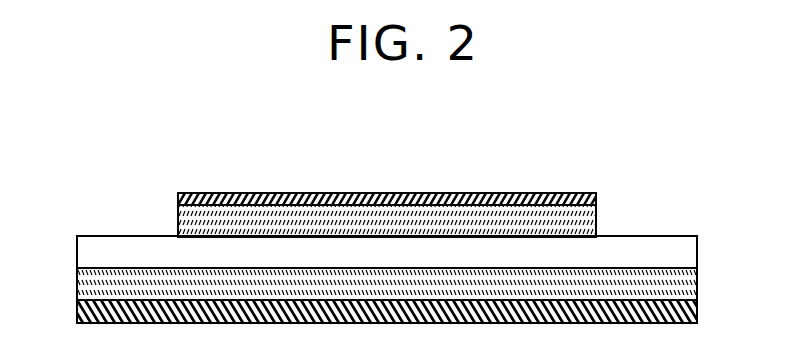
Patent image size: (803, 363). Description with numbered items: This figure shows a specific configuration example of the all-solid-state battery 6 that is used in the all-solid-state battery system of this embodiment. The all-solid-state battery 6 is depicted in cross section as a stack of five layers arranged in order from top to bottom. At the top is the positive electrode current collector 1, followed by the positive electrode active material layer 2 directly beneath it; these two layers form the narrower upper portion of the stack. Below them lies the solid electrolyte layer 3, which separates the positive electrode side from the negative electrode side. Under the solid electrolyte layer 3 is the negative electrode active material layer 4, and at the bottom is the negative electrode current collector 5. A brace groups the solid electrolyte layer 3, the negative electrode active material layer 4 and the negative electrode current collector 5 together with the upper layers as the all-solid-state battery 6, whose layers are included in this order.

The positive electrode current collector 1 is at (596, 195).
The positive electrode active material layer 2 is at (596, 220).
The solid electrolyte layer 3 is at (697, 253).
The negative electrode active material layer 4 is at (697, 283).
The negative electrode current collector 5 is at (697, 310).
The all-solid-state battery 6 is at (396, 261).